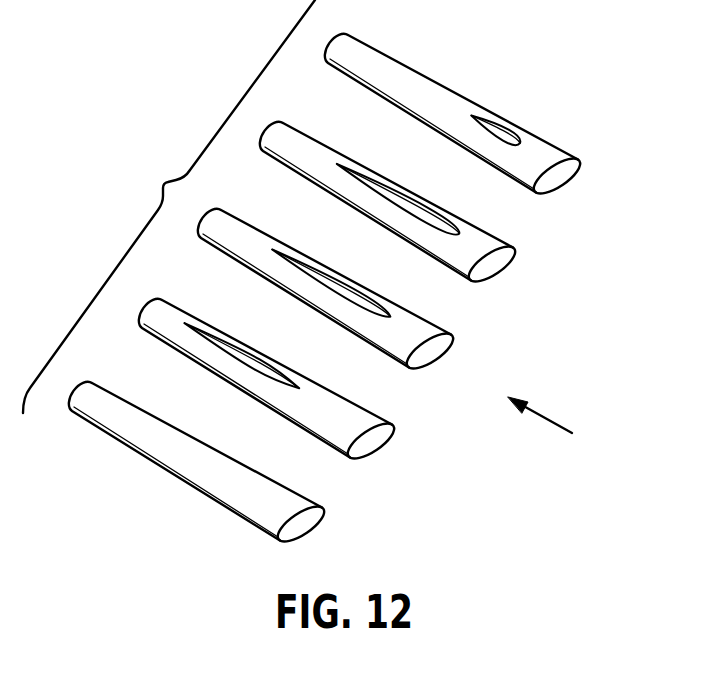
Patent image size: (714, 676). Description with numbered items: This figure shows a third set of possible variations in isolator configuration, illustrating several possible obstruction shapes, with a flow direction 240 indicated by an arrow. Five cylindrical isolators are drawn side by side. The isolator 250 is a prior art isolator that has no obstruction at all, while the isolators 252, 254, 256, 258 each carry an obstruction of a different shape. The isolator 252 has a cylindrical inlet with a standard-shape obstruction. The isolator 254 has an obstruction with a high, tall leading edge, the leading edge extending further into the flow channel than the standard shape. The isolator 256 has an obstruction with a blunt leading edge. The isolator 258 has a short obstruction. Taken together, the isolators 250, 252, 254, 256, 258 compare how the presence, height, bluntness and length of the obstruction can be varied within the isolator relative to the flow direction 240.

The flow direction 240 is at (550, 417).
The isolator 250 is at (302, 500).
The isolator 252 is at (360, 418).
The isolator 254 is at (433, 325).
The isolator 256 is at (506, 249).
The isolator 258 is at (560, 153).